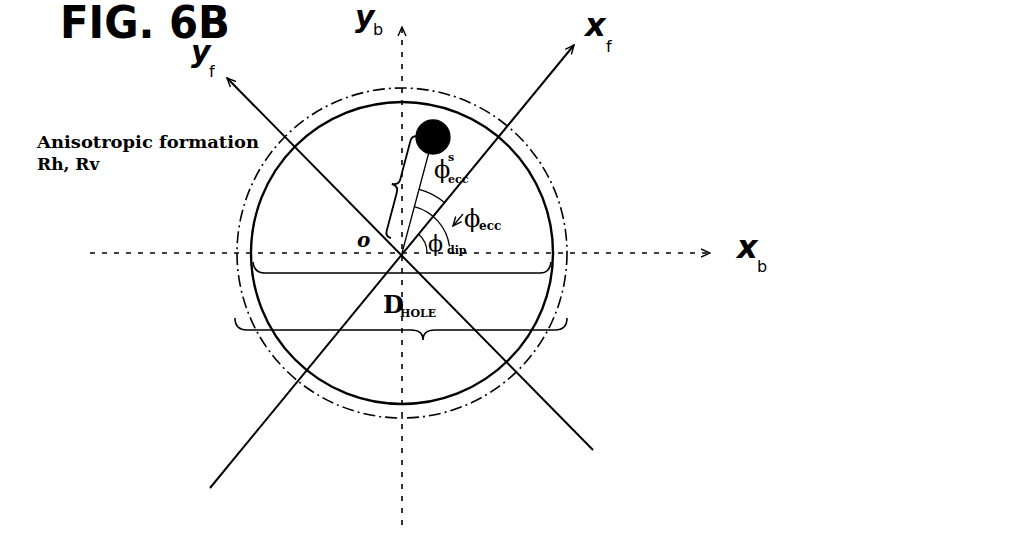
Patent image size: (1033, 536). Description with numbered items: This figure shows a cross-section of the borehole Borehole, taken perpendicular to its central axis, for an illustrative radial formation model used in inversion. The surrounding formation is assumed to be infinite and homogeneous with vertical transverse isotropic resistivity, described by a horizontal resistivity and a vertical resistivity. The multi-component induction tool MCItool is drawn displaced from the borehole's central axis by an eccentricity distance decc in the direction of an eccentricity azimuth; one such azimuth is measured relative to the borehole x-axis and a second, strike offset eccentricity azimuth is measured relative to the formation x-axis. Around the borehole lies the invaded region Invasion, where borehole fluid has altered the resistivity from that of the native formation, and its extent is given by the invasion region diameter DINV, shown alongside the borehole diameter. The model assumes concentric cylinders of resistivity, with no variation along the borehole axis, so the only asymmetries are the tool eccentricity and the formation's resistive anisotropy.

The borehole Borehole is at (548, 193).
The invaded region Invasion is at (558, 292).
The multi-component induction tool MCItool is at (446, 117).
The eccentricity distance decc is at (383, 185).
The invasion region diameter DINV is at (401, 348).